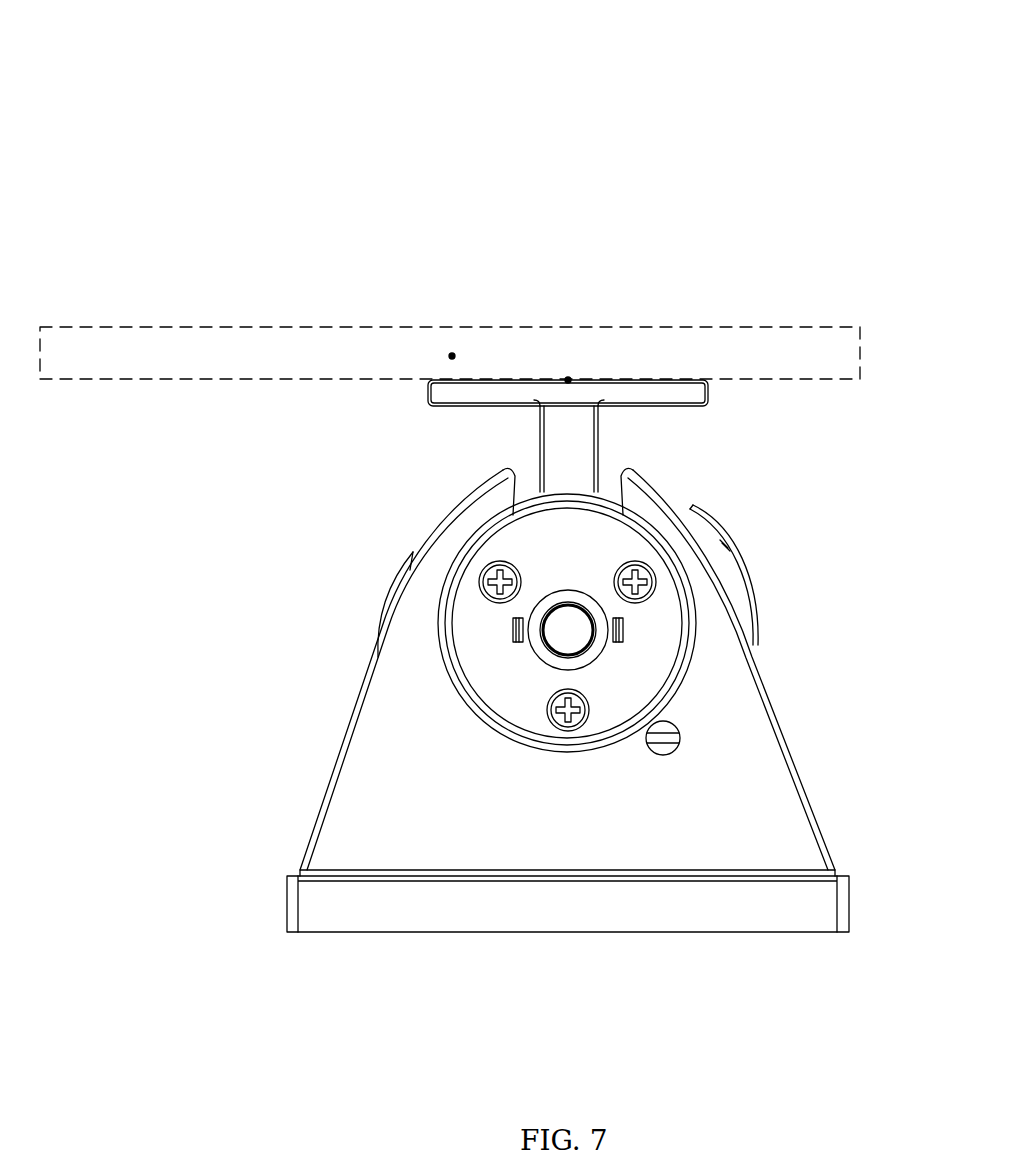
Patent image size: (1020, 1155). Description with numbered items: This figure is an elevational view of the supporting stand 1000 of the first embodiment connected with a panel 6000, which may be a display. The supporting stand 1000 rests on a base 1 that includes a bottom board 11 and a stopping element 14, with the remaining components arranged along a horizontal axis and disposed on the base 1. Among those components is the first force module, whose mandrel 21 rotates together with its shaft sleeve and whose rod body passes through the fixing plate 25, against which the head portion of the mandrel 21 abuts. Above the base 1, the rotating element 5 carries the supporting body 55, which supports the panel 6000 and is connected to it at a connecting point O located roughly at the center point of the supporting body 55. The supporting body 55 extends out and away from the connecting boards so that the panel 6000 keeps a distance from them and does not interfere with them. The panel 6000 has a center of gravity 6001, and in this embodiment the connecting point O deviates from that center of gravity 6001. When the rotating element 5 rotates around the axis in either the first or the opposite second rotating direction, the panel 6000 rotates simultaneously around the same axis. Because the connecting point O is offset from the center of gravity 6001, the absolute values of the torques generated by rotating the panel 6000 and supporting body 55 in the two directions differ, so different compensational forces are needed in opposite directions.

The supporting stand 1000 is at (340, 50).
The base 1 is at (773, 795).
The bottom board 11 is at (826, 900).
The stopping element 14 is at (660, 735).
The mandrel 21 is at (568, 640).
The fixing plate 25 is at (650, 615).
The rotating element 5 is at (608, 436).
The supporting body 55 is at (695, 396).
The panel 6000 is at (552, 325).
The center of gravity 6001 is at (452, 356).
The connecting point O is at (568, 380).